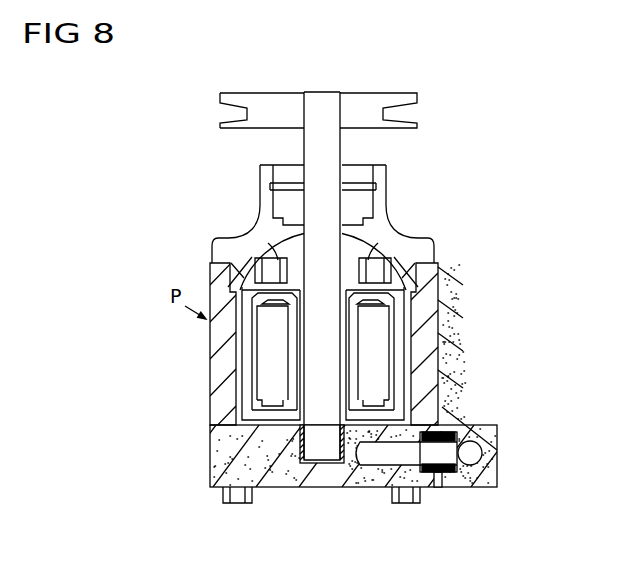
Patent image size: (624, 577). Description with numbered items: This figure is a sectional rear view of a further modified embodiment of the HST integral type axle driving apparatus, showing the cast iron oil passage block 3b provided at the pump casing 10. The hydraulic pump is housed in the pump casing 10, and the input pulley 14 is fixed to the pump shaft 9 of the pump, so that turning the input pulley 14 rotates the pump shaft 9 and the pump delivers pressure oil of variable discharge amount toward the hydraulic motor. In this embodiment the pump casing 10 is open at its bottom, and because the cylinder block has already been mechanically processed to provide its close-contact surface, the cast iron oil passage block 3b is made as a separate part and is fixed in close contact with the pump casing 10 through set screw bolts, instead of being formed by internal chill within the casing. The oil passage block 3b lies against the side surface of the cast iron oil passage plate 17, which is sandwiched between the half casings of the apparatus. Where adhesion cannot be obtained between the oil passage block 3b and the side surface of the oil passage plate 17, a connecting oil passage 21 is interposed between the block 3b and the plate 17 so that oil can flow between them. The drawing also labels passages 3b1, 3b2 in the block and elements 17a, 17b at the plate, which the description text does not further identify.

The input pulley 14 is at (417, 93).
The pump shaft 9 is at (341, 118).
The cast iron oil passage plate 17 is at (484, 327).
The pump casing 10 is at (210, 373).
The cast iron oil passage block 3b is at (278, 477).
The passage in base plate 3b1 is at (362, 502).
The passage in base plate 3b2 is at (380, 450).
The connecting oil passage 21 is at (427, 483).
The ball / contact element 17a is at (507, 488).
The ball / contact element 17b is at (478, 463).